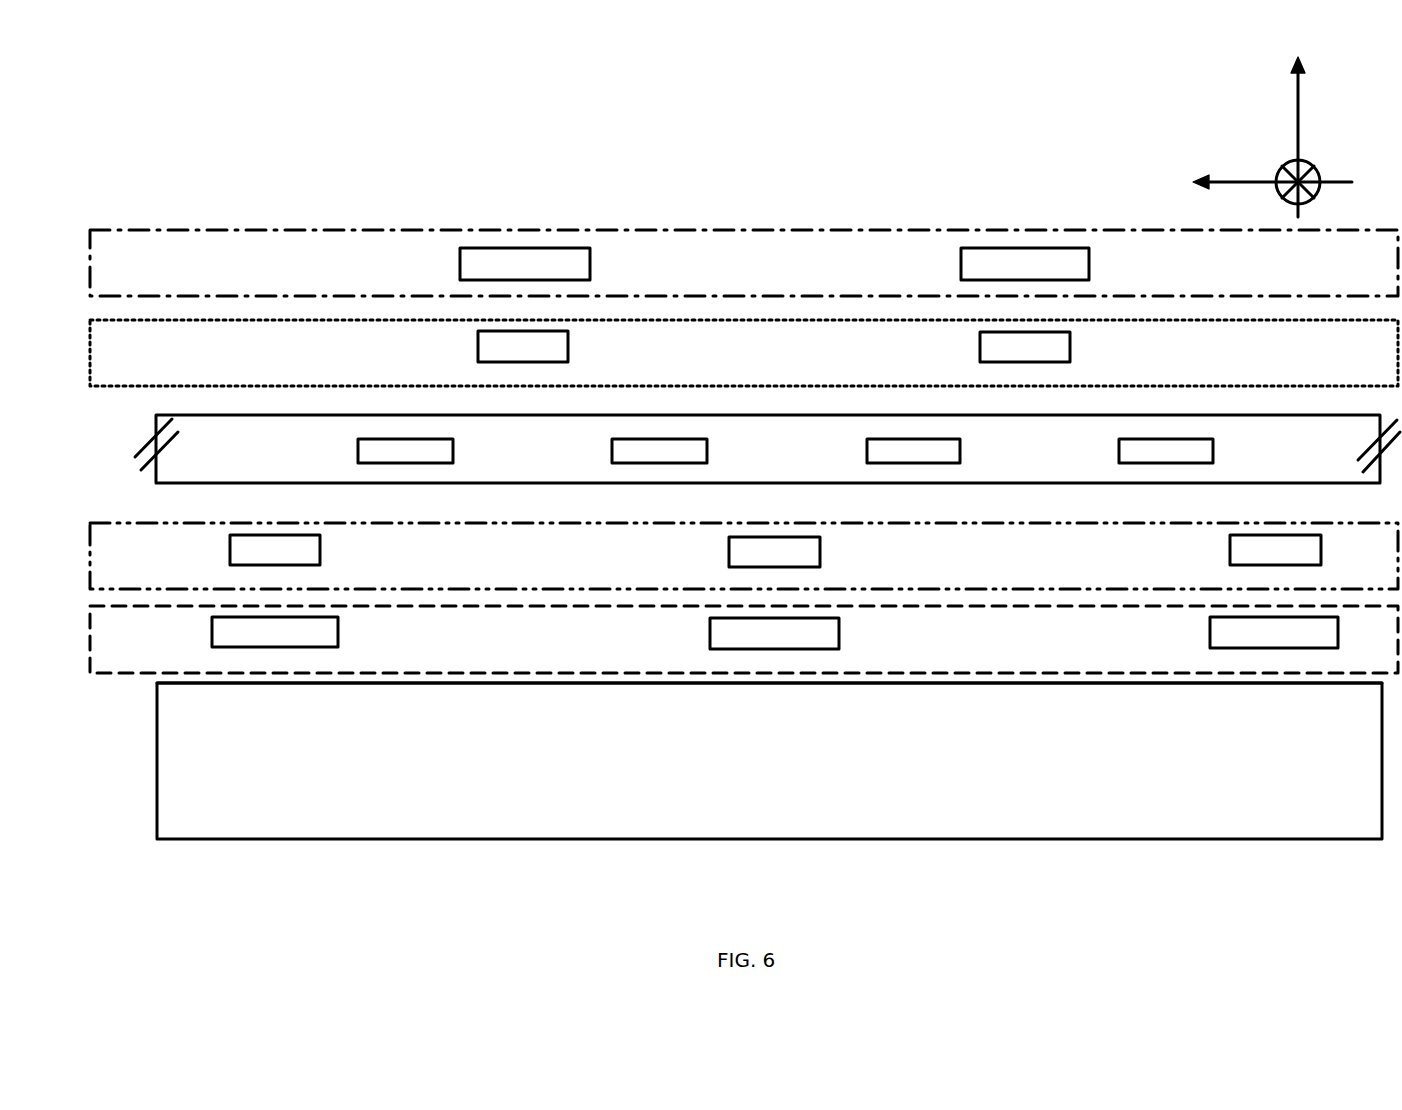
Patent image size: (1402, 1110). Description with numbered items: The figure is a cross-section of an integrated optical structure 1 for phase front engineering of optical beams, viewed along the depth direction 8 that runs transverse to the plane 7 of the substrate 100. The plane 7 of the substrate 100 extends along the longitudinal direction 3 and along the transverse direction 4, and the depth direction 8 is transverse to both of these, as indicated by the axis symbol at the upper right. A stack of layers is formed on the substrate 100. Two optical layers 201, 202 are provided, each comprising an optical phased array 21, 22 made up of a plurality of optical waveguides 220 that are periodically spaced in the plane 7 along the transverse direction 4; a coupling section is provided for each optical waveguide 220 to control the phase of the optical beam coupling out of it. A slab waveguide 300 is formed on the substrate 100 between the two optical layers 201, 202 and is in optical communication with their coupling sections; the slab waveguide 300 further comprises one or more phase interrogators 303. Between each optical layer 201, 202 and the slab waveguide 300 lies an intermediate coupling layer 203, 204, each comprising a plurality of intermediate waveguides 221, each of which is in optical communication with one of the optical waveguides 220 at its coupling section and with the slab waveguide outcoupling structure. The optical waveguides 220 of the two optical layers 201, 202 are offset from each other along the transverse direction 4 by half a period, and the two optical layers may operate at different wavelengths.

The integrated optical structure 1 is at (297, 160).
The optical phased array 22 is at (122, 256).
The optical layer 202 is at (722, 296).
The intermediate coupling layer 204 is at (702, 386).
The slab waveguide 300 is at (245, 417).
The phase interrogator 303 is at (453, 451).
The optical phased array 21 is at (142, 654).
The intermediate coupling layer 203 is at (954, 589).
The optical layer 201 is at (978, 674).
The optical waveguide 220 is at (460, 268).
The intermediate waveguide 221 is at (478, 352).
The plane of the substrate 7 is at (394, 685).
The substrate 100 is at (212, 842).
The depth direction 8 is at (1298, 92).
The transverse direction 4 is at (1237, 182).
The longitudinal direction 3 is at (1316, 161).